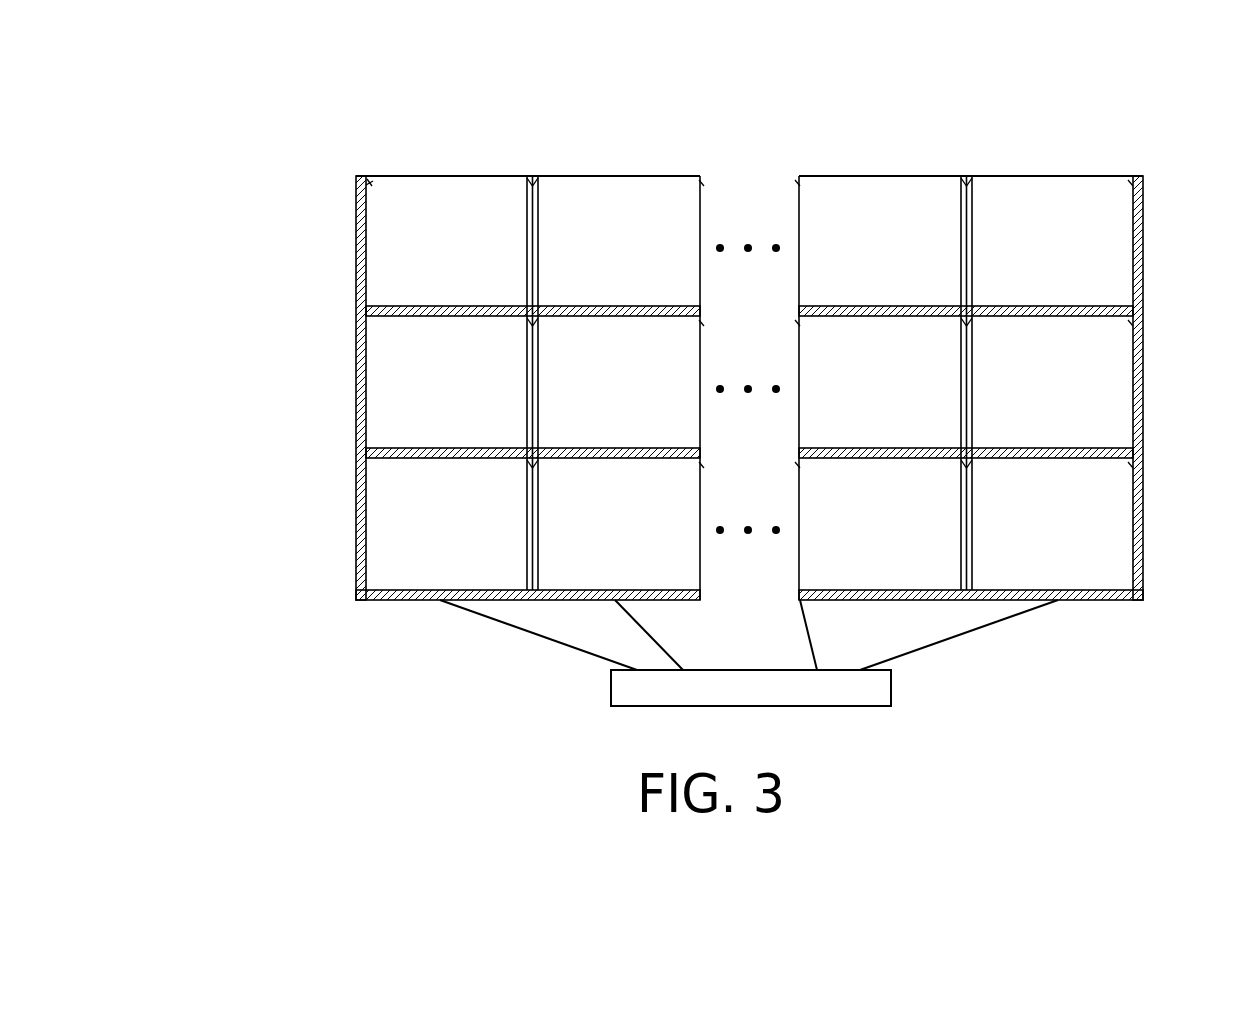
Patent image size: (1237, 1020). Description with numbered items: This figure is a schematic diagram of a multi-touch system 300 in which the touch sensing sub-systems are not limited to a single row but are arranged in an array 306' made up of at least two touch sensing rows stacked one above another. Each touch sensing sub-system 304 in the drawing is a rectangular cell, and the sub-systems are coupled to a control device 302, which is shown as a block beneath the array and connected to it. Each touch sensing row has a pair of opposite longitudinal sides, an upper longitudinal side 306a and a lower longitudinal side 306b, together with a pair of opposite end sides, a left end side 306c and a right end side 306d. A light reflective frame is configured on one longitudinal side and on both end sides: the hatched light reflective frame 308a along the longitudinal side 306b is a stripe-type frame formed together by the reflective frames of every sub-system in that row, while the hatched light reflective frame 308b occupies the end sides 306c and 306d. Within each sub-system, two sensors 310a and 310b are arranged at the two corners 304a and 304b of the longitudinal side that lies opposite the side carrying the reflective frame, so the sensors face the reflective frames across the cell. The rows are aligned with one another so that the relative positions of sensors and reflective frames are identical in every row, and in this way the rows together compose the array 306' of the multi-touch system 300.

The multi-touch system 300 is at (893, 158).
The control device 302 is at (885, 690).
The touch sensing sub-system 304 is at (1118, 244).
The corner of touch sensing sub-system 304a is at (518, 198).
The corner of touch sensing sub-system 304b is at (374, 197).
The array 306' is at (437, 368).
The longitudinal side 306a is at (1083, 463).
The longitudinal side 306b is at (1100, 600).
The end side 306c is at (355, 572).
The end side 306d is at (1157, 553).
The light reflective frame 308a is at (395, 600).
The light reflective frame 308b is at (358, 550).
The sensor 310a is at (528, 178).
The sensor 310b is at (374, 178).